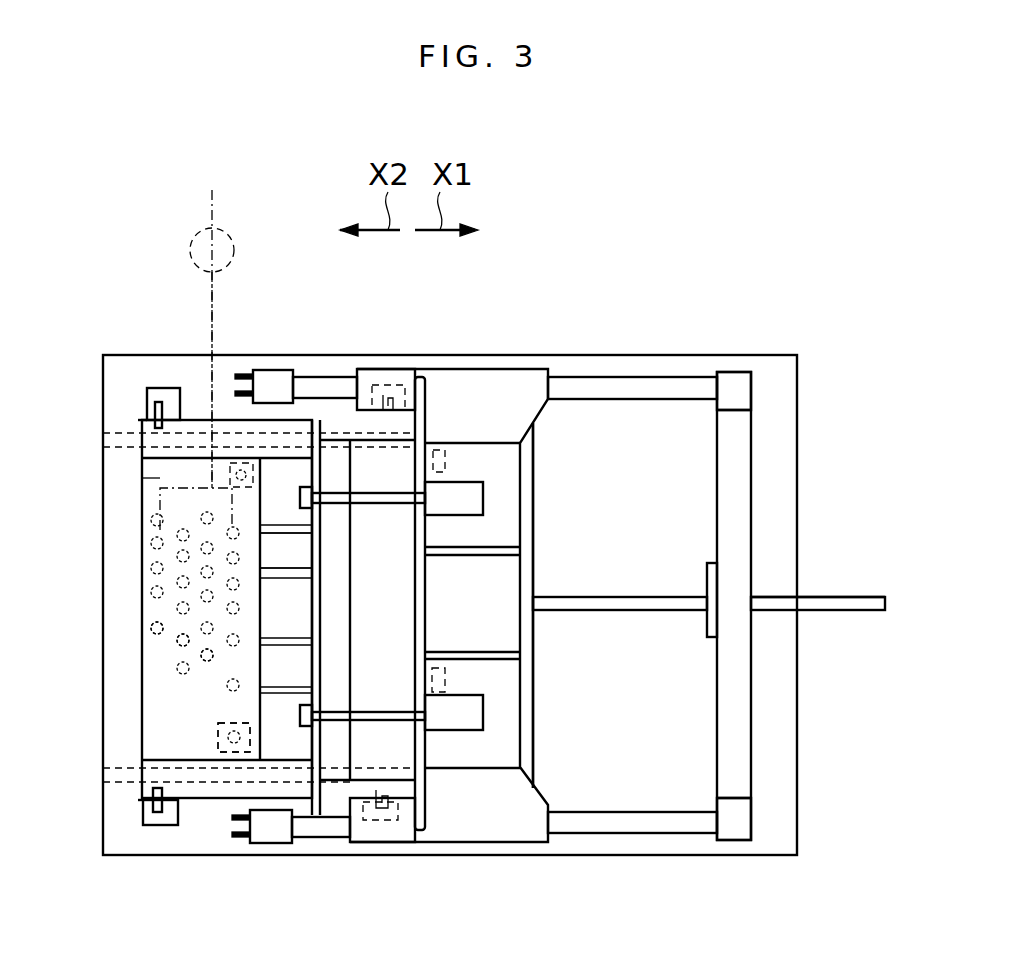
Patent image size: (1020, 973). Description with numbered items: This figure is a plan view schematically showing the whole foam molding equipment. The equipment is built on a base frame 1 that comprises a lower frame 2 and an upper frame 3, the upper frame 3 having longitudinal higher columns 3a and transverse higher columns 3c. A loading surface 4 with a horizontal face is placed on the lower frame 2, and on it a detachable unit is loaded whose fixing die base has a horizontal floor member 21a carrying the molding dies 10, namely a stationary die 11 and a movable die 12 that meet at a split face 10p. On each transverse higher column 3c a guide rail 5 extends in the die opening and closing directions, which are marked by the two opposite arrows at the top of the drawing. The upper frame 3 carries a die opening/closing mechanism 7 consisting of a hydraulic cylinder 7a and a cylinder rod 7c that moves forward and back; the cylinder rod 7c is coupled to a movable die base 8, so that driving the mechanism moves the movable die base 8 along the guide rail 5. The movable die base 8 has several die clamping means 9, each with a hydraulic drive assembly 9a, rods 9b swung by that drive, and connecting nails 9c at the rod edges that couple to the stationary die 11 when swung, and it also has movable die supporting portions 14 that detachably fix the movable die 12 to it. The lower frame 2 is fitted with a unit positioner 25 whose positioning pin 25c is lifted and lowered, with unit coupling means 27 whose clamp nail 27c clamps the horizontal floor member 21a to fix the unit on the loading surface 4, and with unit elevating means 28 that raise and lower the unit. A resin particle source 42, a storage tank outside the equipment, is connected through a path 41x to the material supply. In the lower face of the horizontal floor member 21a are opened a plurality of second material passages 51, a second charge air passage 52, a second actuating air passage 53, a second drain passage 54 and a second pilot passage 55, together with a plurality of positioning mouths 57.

The base frame 1 is at (735, 860).
The lower frame 2 is at (798, 706).
The upper frame 3 is at (738, 813).
The longitudinal higher column 3a is at (278, 370).
The transverse higher column 3c is at (705, 372).
The loading surface 4 is at (145, 567).
The guide rail 5 is at (340, 377).
The die opening/closing mechanism 7 is at (852, 611).
The hydraulic cylinder 7a is at (840, 597).
The cylinder rod 7c is at (641, 610).
The movable die base 8 is at (505, 570).
The die clamping means 9 is at (478, 505).
The hydraulic drive assembly 9a is at (478, 495).
The rod 9b is at (375, 710).
The connecting nail 9c is at (317, 487).
The molding dies 10 is at (378, 618).
The split face 10p is at (412, 640).
The stationary die 11 is at (330, 580).
The movable die 12 is at (395, 598).
The movable die supporting portion 14 is at (438, 450).
The horizontal floor member 21a is at (142, 478).
The unit positioner 25 is at (255, 463).
The positioning pin 25c is at (245, 755).
The unit coupling means 27 is at (410, 375).
The clamp nail 27c is at (390, 385).
The unit elevating means 28 is at (222, 433).
The path 41x is at (206, 312).
The resin particle source 42 is at (212, 322).
The second material passage 51 is at (157, 520).
The second charge air passage 52 is at (150, 628).
The second actuating air passage 53 is at (185, 648).
The second drain passage 54 is at (286, 551).
The second pilot passage 55 is at (207, 662).
The positioning mouth 57 is at (288, 615).